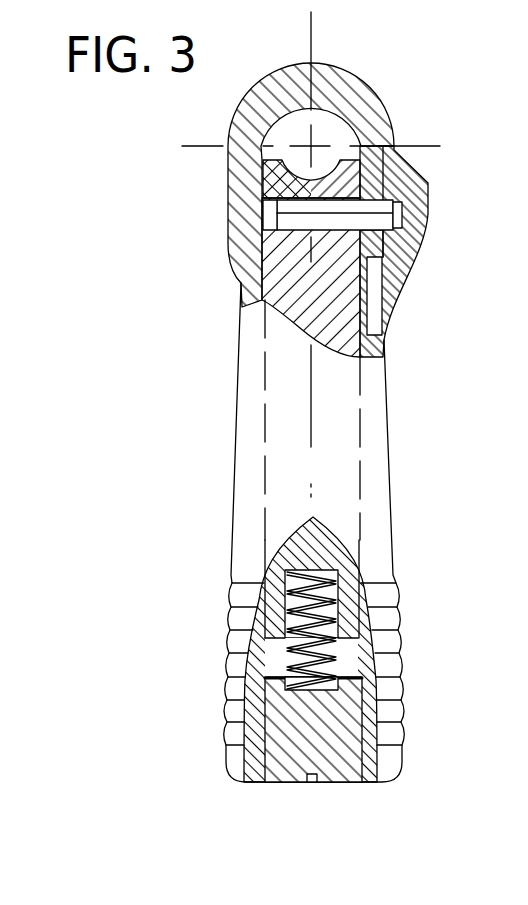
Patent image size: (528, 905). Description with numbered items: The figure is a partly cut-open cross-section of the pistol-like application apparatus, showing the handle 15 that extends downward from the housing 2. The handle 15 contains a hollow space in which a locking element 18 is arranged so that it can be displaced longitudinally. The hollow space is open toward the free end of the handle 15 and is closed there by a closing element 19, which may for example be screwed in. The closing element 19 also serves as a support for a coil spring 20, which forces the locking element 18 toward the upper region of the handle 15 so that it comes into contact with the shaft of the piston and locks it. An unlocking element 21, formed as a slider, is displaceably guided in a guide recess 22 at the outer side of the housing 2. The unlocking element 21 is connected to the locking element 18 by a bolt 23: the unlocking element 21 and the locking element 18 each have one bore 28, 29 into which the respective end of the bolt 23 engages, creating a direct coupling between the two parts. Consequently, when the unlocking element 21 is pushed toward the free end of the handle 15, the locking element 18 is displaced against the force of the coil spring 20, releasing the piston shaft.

The housing 2 is at (365, 105).
The unlocking element 21 is at (420, 187).
The bore 28 is at (428, 217).
The bore 29 is at (270, 218).
The bolt 23 is at (382, 225).
The guide recess 22 is at (385, 322).
The locking element 18 is at (265, 295).
The handle 15 is at (372, 487).
The coil spring 20 is at (373, 650).
The closing element 19 is at (291, 757).